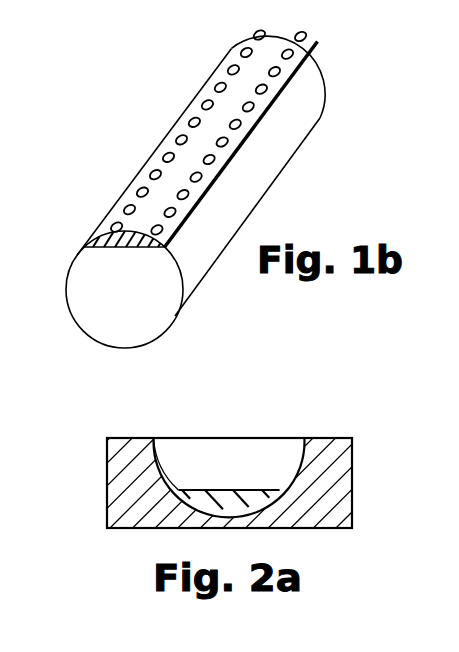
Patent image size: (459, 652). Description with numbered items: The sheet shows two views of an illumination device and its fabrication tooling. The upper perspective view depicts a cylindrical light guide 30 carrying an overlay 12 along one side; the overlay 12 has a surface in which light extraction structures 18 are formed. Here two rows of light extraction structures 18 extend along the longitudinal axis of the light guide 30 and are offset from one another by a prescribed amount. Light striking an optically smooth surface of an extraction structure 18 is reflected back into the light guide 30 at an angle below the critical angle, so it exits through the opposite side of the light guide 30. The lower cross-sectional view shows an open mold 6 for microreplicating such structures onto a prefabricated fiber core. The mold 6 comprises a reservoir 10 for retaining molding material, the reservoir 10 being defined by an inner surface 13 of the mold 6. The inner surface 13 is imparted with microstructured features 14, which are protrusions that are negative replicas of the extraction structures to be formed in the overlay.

In FIG. 2A, the mold 6 is at (318, 433).
In FIG. 2A, the reservoir 10 is at (220, 448).
In FIG. 1B, the overlay 12 is at (93, 244).
In FIG. 2A, the inner surface 13 is at (176, 455).
In FIG. 2A, the microstructured feature 14 is at (251, 492).
In FIG. 1B, the light extraction structures 18 is at (170, 210).
In FIG. 1B, the light guide 30 is at (102, 328).